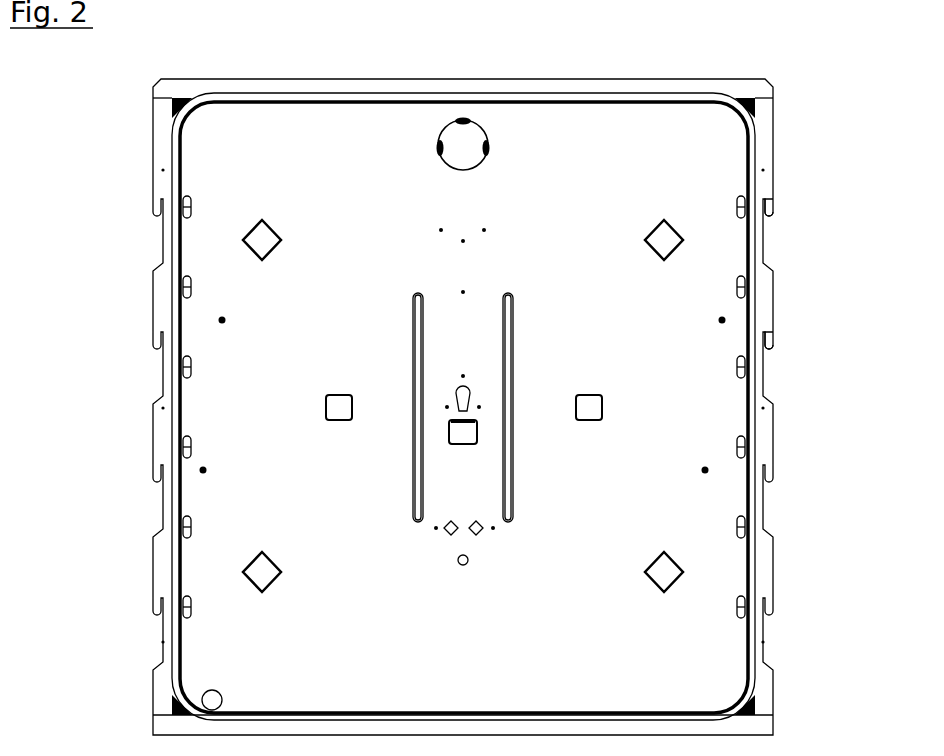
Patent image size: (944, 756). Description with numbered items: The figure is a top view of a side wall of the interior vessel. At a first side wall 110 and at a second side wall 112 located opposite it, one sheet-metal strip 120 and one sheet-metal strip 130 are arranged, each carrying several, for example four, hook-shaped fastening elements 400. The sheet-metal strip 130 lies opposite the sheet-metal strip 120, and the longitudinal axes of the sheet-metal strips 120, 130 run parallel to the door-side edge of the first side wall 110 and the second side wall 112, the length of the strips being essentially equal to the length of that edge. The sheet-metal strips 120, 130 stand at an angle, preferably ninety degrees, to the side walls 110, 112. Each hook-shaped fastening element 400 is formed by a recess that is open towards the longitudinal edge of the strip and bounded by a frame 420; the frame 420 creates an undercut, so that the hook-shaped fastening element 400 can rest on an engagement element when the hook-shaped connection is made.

The first side wall 110 is at (752, 153).
The second side wall 112 is at (172, 239).
The sheet-metal strip 120 is at (753, 112).
The sheet-metal strip 130 is at (172, 125).
The hook-shaped fastening element 400 is at (777, 228).
The frame 420 is at (765, 363).